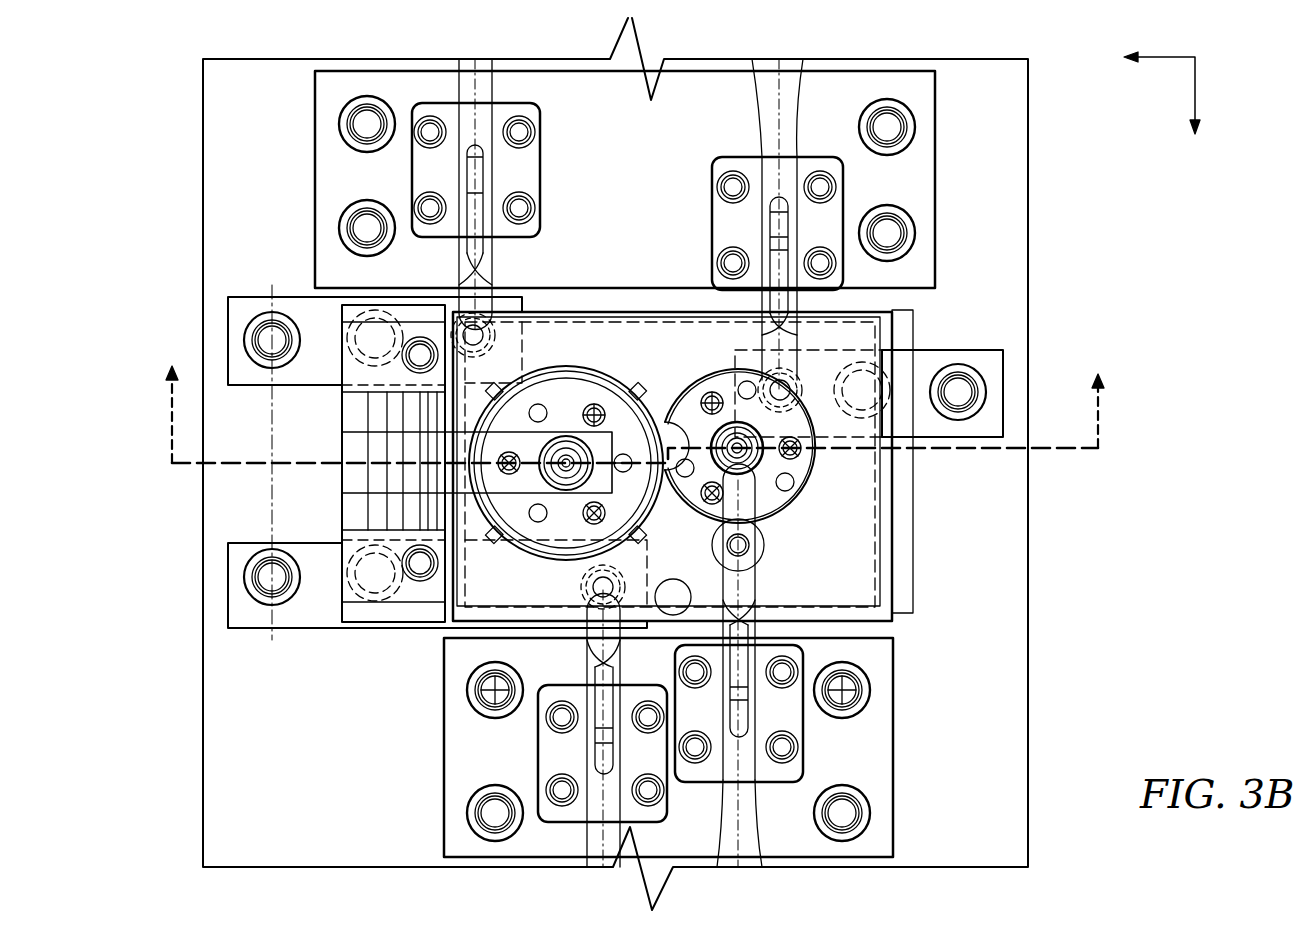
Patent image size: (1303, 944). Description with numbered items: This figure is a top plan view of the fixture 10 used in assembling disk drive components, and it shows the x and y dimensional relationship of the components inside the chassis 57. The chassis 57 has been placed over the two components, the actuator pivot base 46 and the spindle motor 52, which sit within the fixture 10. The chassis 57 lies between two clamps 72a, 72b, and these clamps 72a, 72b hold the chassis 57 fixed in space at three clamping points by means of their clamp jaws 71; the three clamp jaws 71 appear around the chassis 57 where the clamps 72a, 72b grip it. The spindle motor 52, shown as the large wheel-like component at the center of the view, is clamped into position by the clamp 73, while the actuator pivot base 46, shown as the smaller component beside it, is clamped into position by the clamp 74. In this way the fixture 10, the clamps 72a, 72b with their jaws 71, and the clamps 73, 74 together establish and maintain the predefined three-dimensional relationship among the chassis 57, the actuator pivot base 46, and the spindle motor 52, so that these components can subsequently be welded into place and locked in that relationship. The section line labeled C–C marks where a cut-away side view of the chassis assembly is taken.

The fixture 10 is at (980, 667).
The clamp 72a is at (313, 171).
The clamp 72b is at (893, 715).
The chassis 57 is at (647, 350).
The spindle motor 52 is at (573, 370).
The clamp 73 is at (528, 480).
The clamp 74 is at (743, 497).
The actuator pivot base 46 is at (760, 457).
The clamp jaws 71 is at (485, 350).